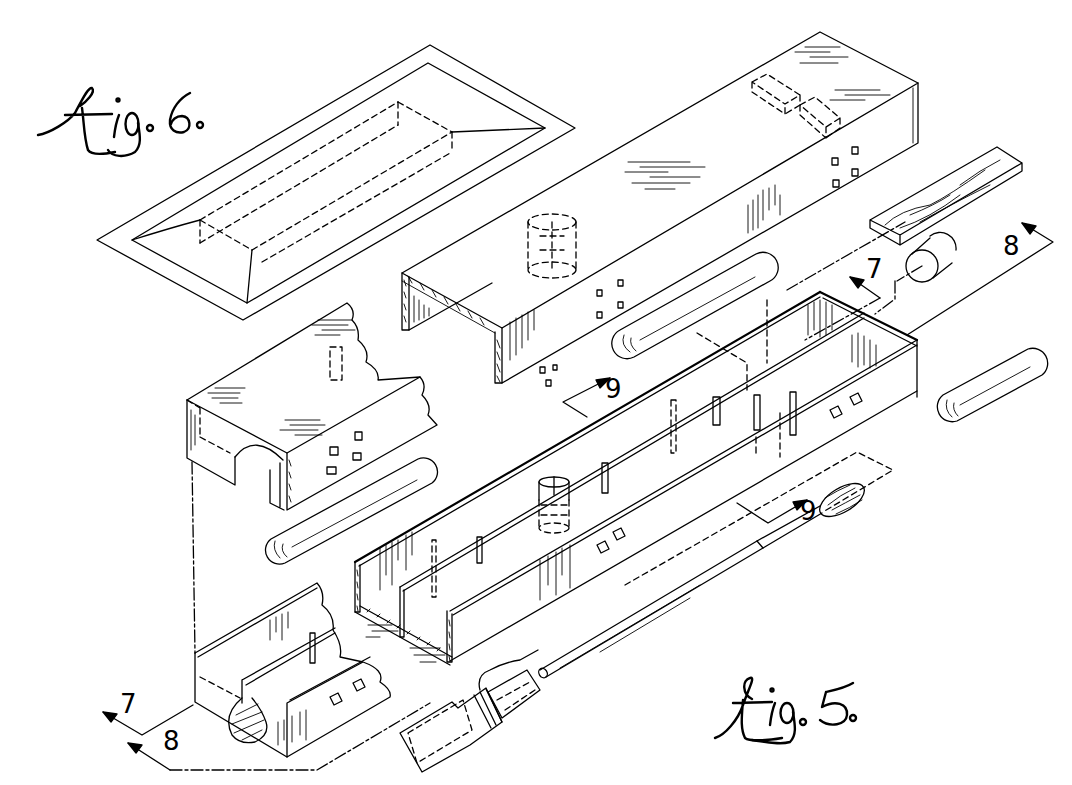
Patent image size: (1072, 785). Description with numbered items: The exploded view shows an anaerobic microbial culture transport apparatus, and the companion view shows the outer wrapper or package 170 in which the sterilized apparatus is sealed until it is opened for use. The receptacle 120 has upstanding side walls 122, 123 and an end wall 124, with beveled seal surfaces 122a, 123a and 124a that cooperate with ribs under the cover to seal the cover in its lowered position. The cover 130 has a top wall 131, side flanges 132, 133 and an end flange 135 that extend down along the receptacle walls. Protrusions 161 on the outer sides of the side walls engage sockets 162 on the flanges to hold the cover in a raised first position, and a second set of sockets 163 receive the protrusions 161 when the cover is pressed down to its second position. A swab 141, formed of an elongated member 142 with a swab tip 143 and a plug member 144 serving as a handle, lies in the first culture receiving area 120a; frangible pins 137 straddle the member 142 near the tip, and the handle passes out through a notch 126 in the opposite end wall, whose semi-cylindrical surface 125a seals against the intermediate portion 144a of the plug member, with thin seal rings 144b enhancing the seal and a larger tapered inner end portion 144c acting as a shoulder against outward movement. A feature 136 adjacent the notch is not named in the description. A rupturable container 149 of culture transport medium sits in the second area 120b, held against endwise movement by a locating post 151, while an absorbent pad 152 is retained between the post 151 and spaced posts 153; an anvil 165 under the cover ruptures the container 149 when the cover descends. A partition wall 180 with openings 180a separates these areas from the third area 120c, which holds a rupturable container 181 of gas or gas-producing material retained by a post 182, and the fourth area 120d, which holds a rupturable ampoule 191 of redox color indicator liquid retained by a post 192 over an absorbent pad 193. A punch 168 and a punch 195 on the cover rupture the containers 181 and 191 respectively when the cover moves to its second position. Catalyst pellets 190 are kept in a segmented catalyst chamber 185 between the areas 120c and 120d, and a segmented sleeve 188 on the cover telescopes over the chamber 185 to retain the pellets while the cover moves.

In FIG. 5, the receptacle 120 is at (662, 533).
In FIG. 5, the first open-top culture device receiving area 120a is at (452, 620).
In FIG. 5, the second open-top container retaining area 120b is at (860, 383).
In FIG. 5, the third open-top container retaining area 120c is at (372, 608).
In FIG. 5, the fourth open-top container retaining area 120d is at (716, 372).
In FIG. 5, the side wall 122 is at (557, 583).
In FIG. 5, the beveled seal surface 122a is at (450, 611).
In FIG. 5, the side wall 123 is at (355, 580).
In FIG. 5, the beveled seal surface 123a is at (575, 435).
In FIG. 5, the end wall 124 is at (917, 338).
In FIG. 5, the beveled seal surface 124a is at (878, 325).
In FIG. 5, the semi-cylindrical wall surface 125a is at (292, 681).
In FIG. 5, the notch or recess 126 is at (257, 710).
In FIG. 5, the cover 130 is at (622, 253).
In FIG. 5, the top wall 131 is at (667, 140).
In FIG. 5, the side flange 132 is at (794, 190).
In FIG. 5, the side flange 133 is at (430, 310).
In FIG. 5, the end flange 135 is at (285, 406).
In FIG. 5, the notch 136 is at (247, 452).
In FIG. 5, the deformable or frangible pins 137 is at (735, 440).
In FIG. 5, the swab 141 is at (727, 578).
In FIG. 5, the elongated member 142 is at (785, 540).
In FIG. 5, the swab tip 143 is at (860, 505).
In FIG. 5, the plug member 144 is at (512, 704).
In FIG. 5, the intermediate portion 144a is at (490, 726).
In FIG. 5, the deformable seal rings 144b is at (505, 660).
In FIG. 5, the inner end portion 144c is at (543, 703).
In FIG. 5, the rupturable container 149 is at (997, 398).
In FIG. 5, the locating post 151 is at (842, 418).
In FIG. 5, the pad of absorbent material 152 is at (950, 247).
In FIG. 5, the spaced posts 153 is at (753, 425).
In FIG. 5, the protrusions 161 is at (860, 405).
In FIG. 5, the sockets 162 is at (858, 165).
In FIG. 5, the second set of sockets 163 is at (360, 433).
In FIG. 5, the projection or anvil 165 is at (806, 136).
In FIG. 5, the punch 168 is at (356, 390).
In FIG. 6, the outer wrapper or package 170 is at (392, 97).
In FIG. 5, the partition wall 180 is at (537, 522).
In FIG. 5, the openings 180a is at (712, 408).
In FIG. 5, the rupturable container 181 is at (310, 527).
In FIG. 5, the pin or post 182 is at (434, 541).
In FIG. 5, the catalyst chamber 185 is at (560, 480).
In FIG. 5, the segmented cylindrical sleeve 188 is at (584, 255).
In FIG. 5, the catalyst pellets 190 is at (540, 375).
In FIG. 5, the rupturable container 191 is at (740, 268).
In FIG. 5, the post 192 is at (671, 406).
In FIG. 5, the absorbent pad 193 is at (960, 170).
In FIG. 5, the punch 195 is at (758, 118).